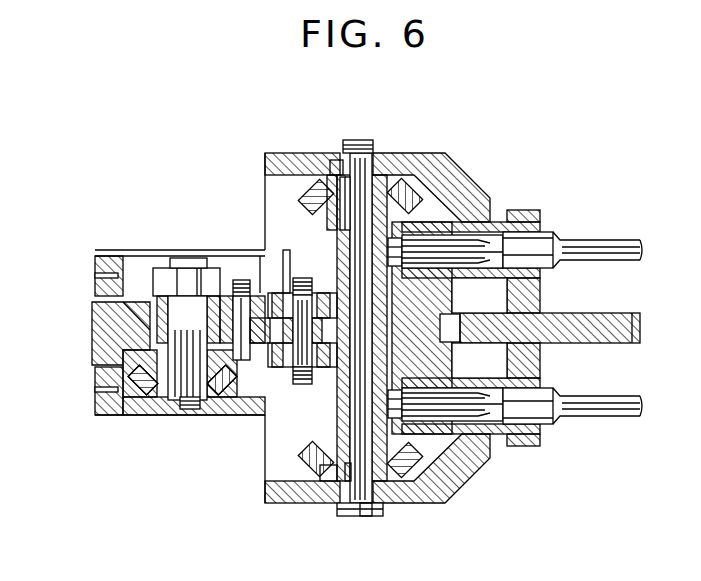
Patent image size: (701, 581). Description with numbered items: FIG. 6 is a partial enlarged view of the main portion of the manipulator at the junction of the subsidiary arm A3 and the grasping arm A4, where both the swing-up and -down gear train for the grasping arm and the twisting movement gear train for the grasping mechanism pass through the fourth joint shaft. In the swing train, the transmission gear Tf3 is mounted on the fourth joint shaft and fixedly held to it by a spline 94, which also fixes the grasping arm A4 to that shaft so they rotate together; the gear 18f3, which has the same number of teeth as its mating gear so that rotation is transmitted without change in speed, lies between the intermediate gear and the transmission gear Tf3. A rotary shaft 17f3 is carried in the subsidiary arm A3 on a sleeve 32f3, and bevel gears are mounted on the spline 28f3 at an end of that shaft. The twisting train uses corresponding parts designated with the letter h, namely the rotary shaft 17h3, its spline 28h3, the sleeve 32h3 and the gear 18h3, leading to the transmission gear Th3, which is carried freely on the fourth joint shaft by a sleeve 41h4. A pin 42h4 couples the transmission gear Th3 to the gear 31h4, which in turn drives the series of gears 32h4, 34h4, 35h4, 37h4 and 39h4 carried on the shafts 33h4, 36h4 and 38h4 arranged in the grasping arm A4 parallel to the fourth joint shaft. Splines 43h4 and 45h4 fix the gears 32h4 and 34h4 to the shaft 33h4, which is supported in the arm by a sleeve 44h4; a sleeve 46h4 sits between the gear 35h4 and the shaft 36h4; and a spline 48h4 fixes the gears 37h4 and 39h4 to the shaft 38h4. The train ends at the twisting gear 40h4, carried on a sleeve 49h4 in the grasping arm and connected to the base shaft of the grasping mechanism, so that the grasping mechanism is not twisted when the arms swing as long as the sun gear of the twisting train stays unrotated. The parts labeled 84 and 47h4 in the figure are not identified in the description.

The pin 42h4 is at (330, 160).
The transmission gear Th3 is at (322, 168).
The bolt head and nut 84 is at (343, 148).
The sleeve 41h4 is at (360, 210).
The subsidiary arm A3 is at (428, 207).
The gear 18h3 is at (430, 217).
The spline 28h3 is at (483, 240).
The sleeve 32h3 is at (540, 230).
The rotary shaft 17h3 is at (547, 268).
The rotary shaft 17f3 is at (547, 388).
The sleeve 32f3 is at (543, 426).
The spline 28f3 is at (483, 414).
The gear 18f3 is at (433, 456).
The spline 94 is at (345, 470).
The transmission gear Tf3 is at (327, 466).
The shaft 33h4 is at (323, 182).
The gear 32h4 is at (262, 232).
The shaft 38h4 is at (167, 262).
The shaft 36h4 is at (241, 282).
The upper left housing block 47h4 is at (135, 285).
The grasping arm A4 is at (220, 292).
The gear 31h4 is at (341, 225).
The spline 43h4 is at (318, 310).
The twisting gear 40h4 is at (107, 328).
The sleeve 49h4 is at (102, 362).
The gear 39h4 is at (125, 397).
The spline 48h4 is at (166, 395).
The gear 35h4 is at (260, 395).
The gear 37h4 is at (128, 405).
The sleeve 46h4 is at (213, 393).
The gear 34h4 is at (340, 462).
The sleeve 44h4 is at (258, 365).
The spline 45h4 is at (262, 385).